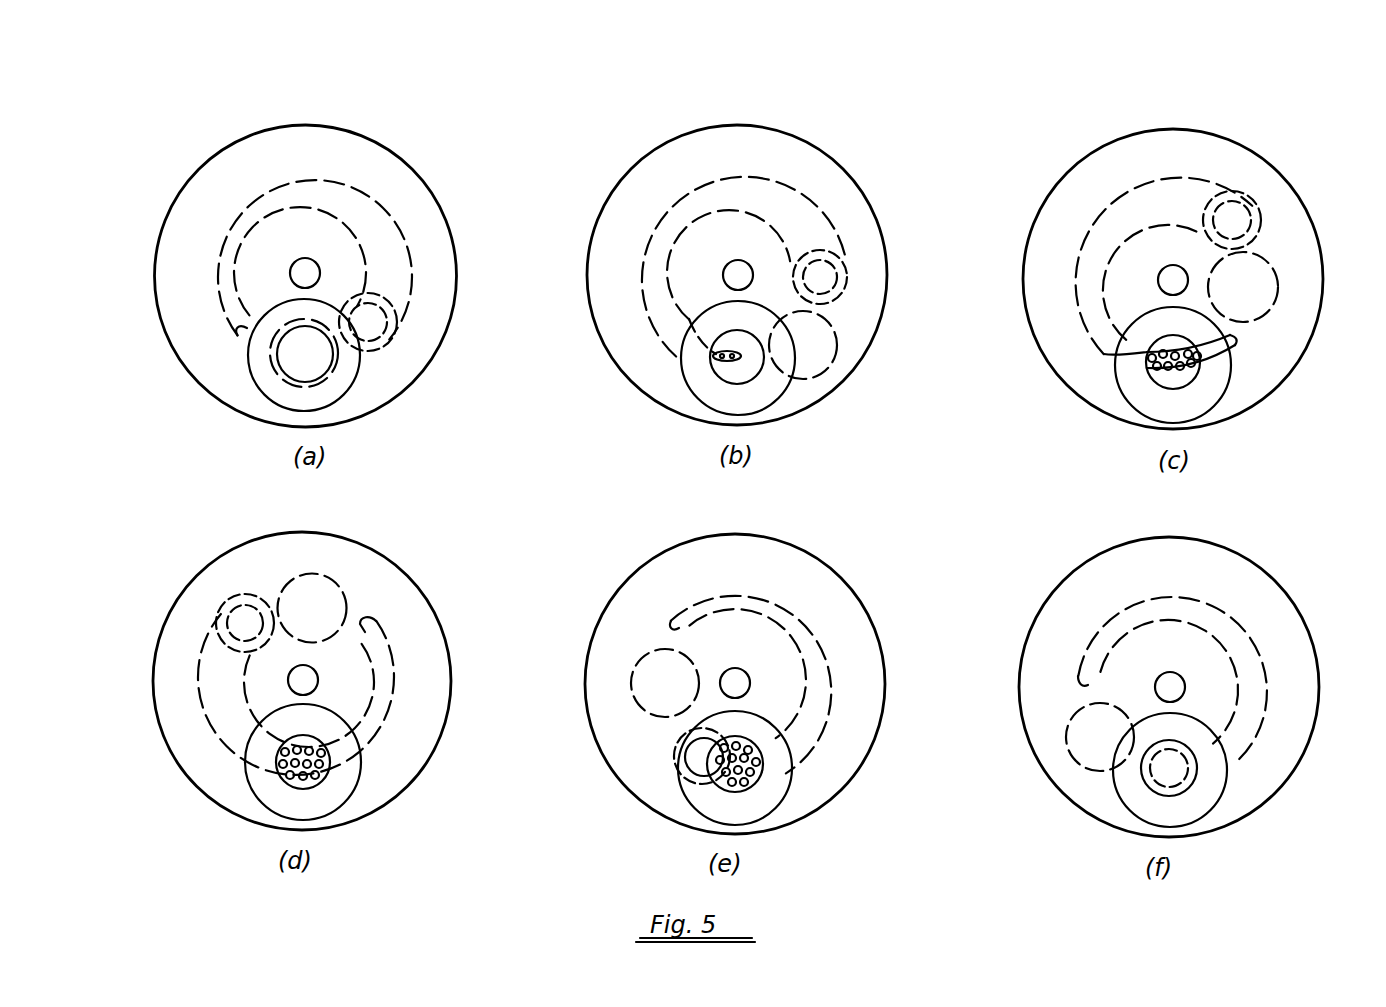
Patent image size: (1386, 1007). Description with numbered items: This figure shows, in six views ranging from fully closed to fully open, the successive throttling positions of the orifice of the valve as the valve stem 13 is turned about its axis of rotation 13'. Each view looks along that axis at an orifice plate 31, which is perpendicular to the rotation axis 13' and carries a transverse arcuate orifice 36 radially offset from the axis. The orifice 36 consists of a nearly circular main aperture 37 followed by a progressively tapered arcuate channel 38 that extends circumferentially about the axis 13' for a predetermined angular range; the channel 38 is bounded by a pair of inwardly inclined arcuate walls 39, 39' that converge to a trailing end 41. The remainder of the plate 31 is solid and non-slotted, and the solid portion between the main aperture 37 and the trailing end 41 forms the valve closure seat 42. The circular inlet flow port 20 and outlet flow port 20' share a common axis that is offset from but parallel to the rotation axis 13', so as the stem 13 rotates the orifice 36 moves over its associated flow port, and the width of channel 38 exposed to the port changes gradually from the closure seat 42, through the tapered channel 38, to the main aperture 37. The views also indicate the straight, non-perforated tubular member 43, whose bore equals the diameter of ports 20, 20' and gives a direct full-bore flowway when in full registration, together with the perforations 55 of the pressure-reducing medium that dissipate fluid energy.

The valve stem 13 is at (640, 481).
The axis of rotation 13' is at (216, 249).
The inlet flow port 20 is at (738, 582).
The outlet flow port 20' is at (304, 353).
The orifice plate 31 is at (332, 535).
The arcuate orifice 36 is at (422, 274).
The main aperture 37 is at (386, 346).
The arcuate channel 38 is at (361, 218).
The arcuate wall 39 is at (315, 181).
The arcuate wall 39' is at (272, 200).
The trailing end 41 is at (247, 330).
The valve closure seat 42 is at (306, 384).
The tubular member 43 is at (1187, 778).
The perforations 55 is at (280, 772).